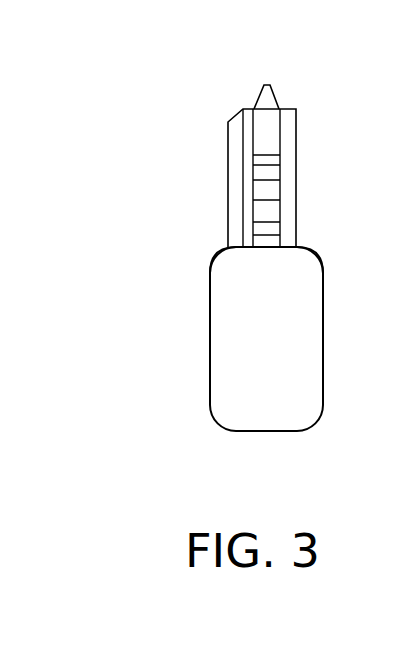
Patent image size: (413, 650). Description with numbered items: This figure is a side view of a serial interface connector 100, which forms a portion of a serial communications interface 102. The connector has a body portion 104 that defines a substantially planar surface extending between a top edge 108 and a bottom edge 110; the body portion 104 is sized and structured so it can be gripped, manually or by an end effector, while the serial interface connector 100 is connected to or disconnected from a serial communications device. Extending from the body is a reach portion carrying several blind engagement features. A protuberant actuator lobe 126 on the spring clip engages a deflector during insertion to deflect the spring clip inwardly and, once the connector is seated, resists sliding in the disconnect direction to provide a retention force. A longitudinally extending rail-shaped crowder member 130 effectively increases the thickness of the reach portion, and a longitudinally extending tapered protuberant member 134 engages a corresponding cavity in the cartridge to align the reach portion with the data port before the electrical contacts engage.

The serial interface connector 100 is at (256, 250).
The serial communications interface 102 is at (267, 126).
The body portion 104 is at (230, 322).
The top edge 108 is at (224, 247).
The bottom edge 110 is at (306, 247).
The protuberant actuator lobe 126 is at (276, 180).
The crowder member 130 is at (228, 152).
The tapered protuberant member 134 is at (267, 84).